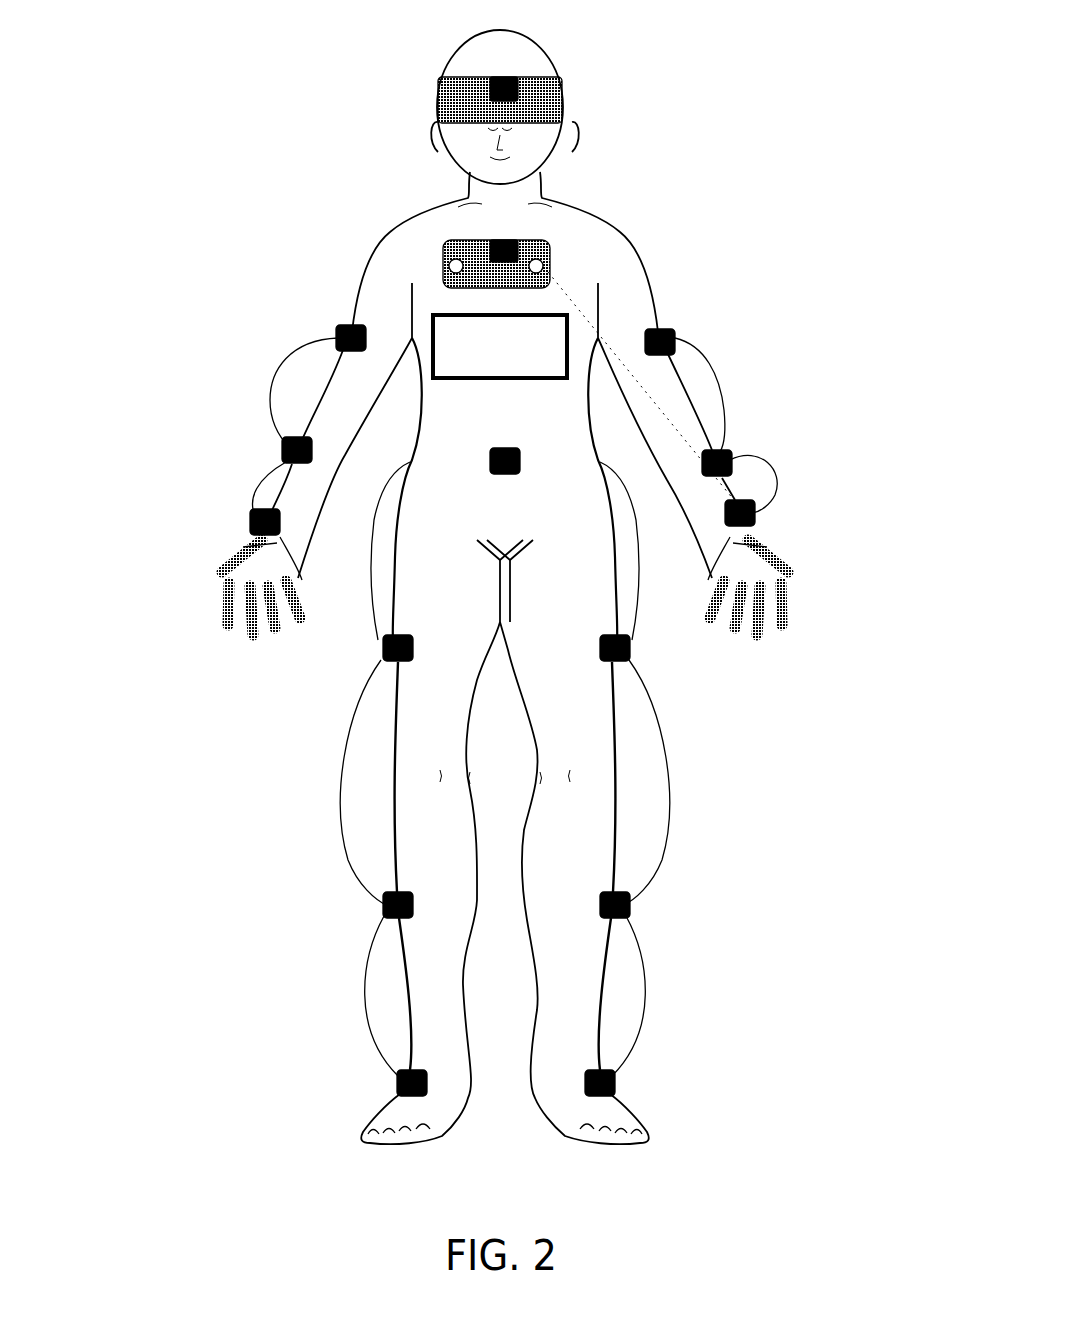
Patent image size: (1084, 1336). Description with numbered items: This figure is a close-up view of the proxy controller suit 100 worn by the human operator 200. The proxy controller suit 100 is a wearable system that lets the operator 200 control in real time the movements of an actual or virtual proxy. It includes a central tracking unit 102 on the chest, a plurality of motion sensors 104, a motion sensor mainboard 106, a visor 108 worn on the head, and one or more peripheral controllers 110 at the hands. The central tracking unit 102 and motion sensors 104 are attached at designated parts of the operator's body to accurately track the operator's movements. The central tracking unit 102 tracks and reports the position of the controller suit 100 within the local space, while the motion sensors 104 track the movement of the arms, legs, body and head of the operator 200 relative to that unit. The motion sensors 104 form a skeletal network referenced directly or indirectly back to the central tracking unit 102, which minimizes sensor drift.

The proxy controller suit 100 is at (260, 228).
The central tracking unit 102 is at (548, 248).
The motion sensors 104 is at (345, 335).
The motion sensor mainboard 106 is at (483, 359).
The visor 108 is at (547, 82).
The peripheral controllers 110 is at (215, 582).
The human operator 200 is at (565, 203).